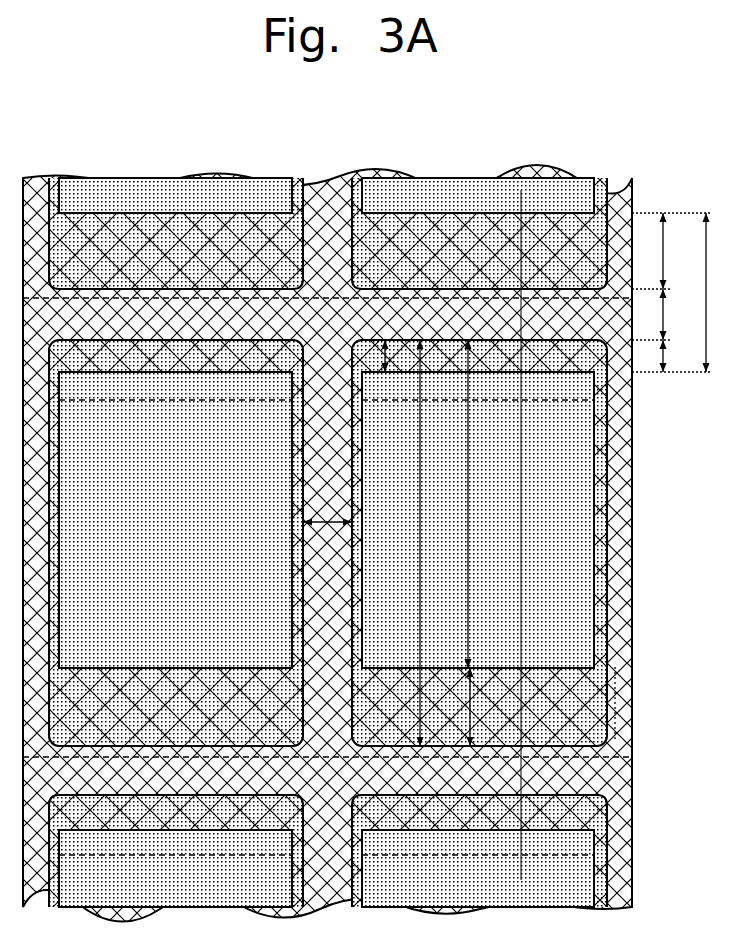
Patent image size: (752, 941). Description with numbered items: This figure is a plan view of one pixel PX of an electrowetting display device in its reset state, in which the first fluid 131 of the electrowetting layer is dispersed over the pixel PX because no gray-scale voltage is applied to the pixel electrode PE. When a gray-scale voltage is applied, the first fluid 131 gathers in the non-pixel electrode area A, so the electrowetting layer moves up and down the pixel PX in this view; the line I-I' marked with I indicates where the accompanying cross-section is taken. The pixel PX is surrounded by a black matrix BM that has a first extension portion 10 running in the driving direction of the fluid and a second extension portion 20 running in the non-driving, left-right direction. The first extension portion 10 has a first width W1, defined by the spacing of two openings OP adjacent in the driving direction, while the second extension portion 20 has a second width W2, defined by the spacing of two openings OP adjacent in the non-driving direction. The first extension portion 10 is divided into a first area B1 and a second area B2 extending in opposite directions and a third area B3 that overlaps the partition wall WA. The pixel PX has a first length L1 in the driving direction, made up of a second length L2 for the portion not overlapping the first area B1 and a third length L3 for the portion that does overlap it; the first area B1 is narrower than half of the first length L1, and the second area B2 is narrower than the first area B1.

The first extension portion 10 is at (543, 376).
The second extension portion 20 is at (353, 453).
The first fluid 131 is at (607, 736).
The pixel PX is at (565, 487).
The pixel electrode PE is at (622, 555).
The opening OP is at (553, 667).
The black matrix BM is at (600, 700).
The partition wall WA is at (590, 772).
The non-pixel electrode area A is at (393, 356).
The first length L1 is at (433, 543).
The second length L2 is at (483, 504).
The third length L3 is at (484, 707).
The first width W1 is at (723, 292).
The second width W2 is at (327, 533).
The first area B1 is at (677, 251).
The second area B2 is at (677, 356).
The third area B3 is at (677, 314).
The line I-I' I is at (523, 195).